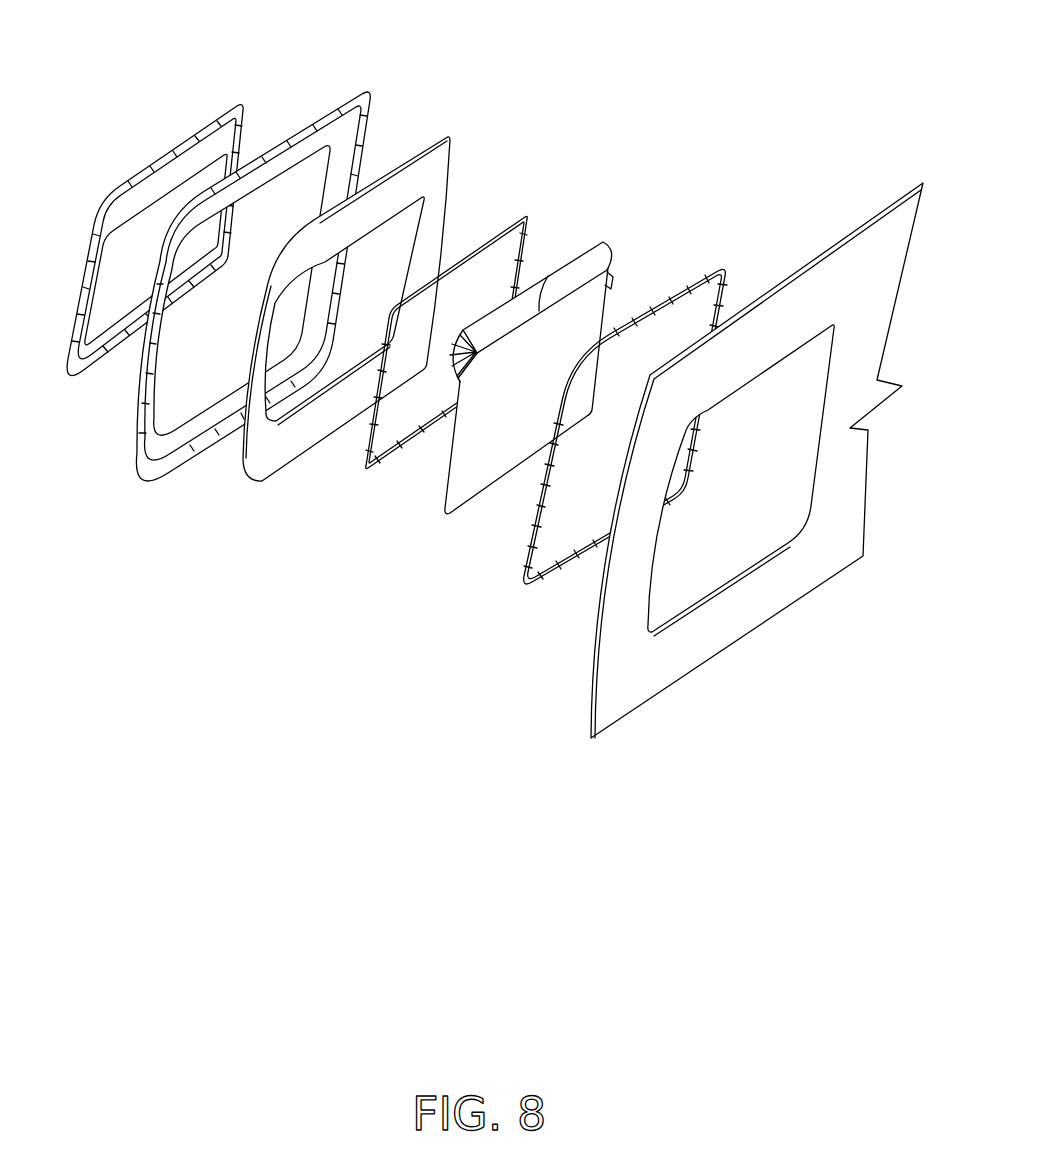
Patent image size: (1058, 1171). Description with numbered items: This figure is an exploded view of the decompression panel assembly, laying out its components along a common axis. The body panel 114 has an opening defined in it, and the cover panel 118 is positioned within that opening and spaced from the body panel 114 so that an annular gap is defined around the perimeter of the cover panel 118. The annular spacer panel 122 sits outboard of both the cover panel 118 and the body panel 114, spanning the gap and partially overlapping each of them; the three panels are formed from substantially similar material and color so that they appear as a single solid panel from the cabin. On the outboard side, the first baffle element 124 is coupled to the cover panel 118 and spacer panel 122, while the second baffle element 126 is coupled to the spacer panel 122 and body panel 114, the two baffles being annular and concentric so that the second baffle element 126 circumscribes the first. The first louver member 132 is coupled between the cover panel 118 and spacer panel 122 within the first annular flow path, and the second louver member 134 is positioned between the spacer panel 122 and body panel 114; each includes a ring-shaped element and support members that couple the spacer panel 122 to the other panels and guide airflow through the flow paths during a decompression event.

The body panel 114 is at (896, 207).
The cover panel 118 is at (605, 237).
The annular spacer panel 122 is at (421, 134).
The first baffle element 124 is at (193, 130).
The second baffle element 126 is at (350, 94).
The first louver member 132 is at (488, 236).
The second louver member 134 is at (717, 263).